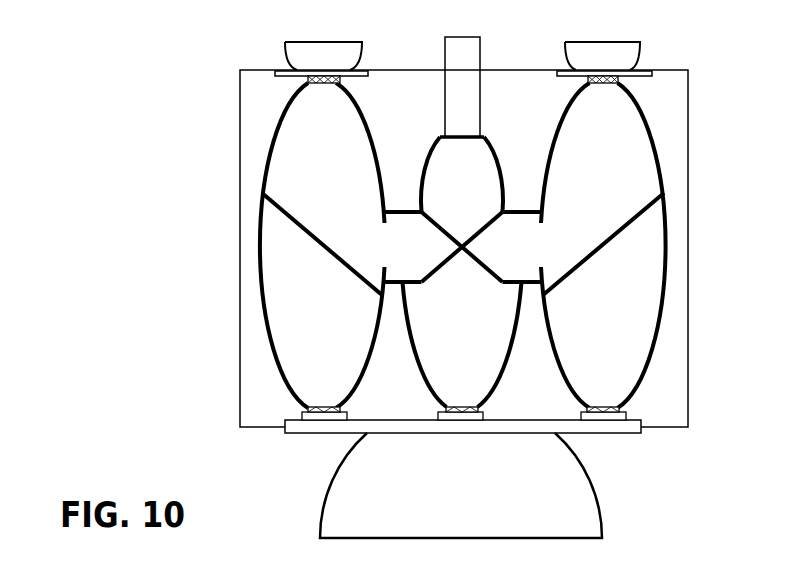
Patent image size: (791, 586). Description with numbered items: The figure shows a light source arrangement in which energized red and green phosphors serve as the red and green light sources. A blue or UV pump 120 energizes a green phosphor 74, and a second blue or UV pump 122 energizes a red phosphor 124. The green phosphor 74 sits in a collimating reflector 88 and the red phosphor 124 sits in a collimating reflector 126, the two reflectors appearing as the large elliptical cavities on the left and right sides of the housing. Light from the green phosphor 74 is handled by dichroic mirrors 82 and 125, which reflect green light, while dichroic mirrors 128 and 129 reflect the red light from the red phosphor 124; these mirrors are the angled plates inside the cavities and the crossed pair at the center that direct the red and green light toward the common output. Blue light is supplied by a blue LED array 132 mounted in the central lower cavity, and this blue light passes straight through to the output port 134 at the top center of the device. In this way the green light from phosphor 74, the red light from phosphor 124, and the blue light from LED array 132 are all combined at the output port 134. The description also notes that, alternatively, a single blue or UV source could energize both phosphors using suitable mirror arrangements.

The green phosphor 74 is at (320, 84).
The dichroic mirror 82 is at (314, 239).
The collimating reflector 88 is at (265, 160).
The blue or UV pump 120 is at (328, 407).
The blue or UV pump 122 is at (610, 407).
The red phosphor 124 is at (604, 84).
The dichroic mirror 125 is at (440, 267).
The collimating reflector 126 is at (664, 172).
The dichroic mirror 128 is at (610, 244).
The dichroic mirror 129 is at (496, 274).
The blue LED array 132 is at (455, 407).
The output port 134 is at (470, 137).